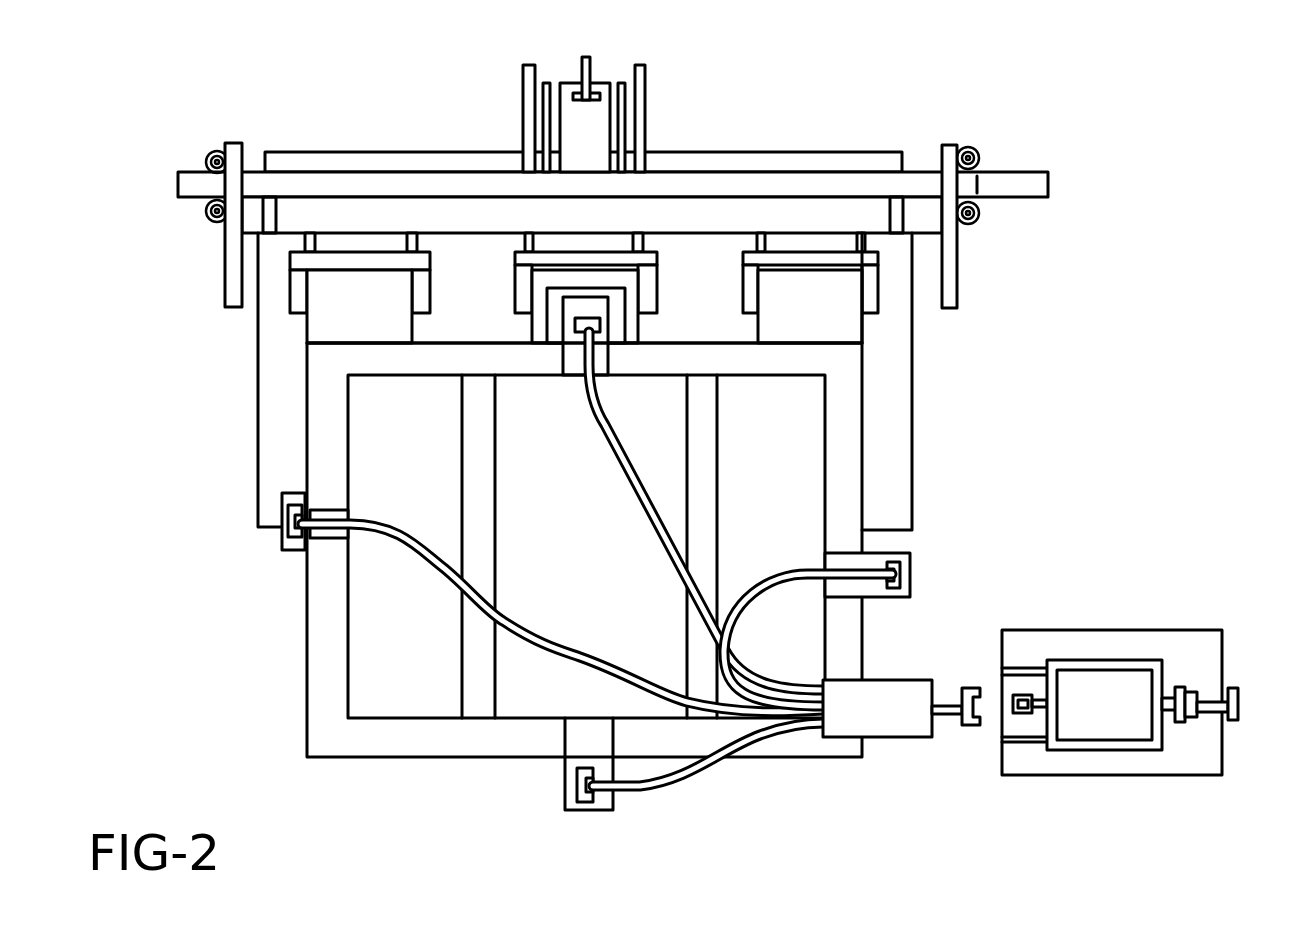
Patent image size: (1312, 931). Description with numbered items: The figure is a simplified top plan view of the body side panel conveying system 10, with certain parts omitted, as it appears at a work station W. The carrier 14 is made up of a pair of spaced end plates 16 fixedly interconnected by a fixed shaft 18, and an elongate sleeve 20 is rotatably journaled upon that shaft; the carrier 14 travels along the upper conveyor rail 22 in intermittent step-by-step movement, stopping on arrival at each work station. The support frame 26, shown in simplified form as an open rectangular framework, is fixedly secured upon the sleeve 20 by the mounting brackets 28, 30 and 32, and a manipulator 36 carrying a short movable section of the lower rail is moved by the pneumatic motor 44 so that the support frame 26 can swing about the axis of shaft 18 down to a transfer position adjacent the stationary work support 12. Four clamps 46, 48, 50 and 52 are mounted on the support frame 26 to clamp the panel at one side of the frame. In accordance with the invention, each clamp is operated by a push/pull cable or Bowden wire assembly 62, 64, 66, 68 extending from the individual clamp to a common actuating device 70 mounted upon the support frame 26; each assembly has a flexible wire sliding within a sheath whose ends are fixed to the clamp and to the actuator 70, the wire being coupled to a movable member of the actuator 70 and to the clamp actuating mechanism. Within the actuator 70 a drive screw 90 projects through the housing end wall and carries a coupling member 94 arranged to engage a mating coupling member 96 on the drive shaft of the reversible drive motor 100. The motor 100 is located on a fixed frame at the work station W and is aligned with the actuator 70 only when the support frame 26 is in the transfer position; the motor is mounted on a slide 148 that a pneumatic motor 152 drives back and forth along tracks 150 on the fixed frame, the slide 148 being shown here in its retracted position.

The body side panel conveying system 10 is at (812, 184).
The stationary work support 12 is at (890, 351).
The carrier 14 is at (960, 296).
The end plates 16 is at (226, 273).
The fixed shaft 18 is at (930, 226).
The sleeve 20 is at (675, 232).
The upper conveyor rail 22 is at (1062, 107).
The support frame 26 is at (303, 689).
The mounting bracket 28 is at (430, 300).
The mounting bracket 30 is at (517, 287).
The mounting bracket 32 is at (743, 290).
The manipulator 36 is at (644, 113).
The pneumatic motor 44 is at (1192, 641).
The clamp 46 is at (605, 338).
The clamp 48 is at (274, 546).
The clamp 50 is at (563, 776).
The clamp 52 is at (907, 552).
The push/pull cable assembly 62 is at (592, 402).
The push/pull cable assembly 64 is at (590, 655).
The push/pull cable assembly 66 is at (680, 770).
The push/pull cable assembly 68 is at (807, 569).
The common actuating device 70 is at (882, 722).
The drive screw 90 is at (950, 716).
The coupling member 94 is at (975, 687).
The mating coupling member 96 is at (1027, 694).
The reversible drive motor 100 is at (1097, 696).
The slide 148 is at (1122, 751).
The tracks 150 is at (1020, 667).
The pneumatic motor 152 is at (1206, 699).
The work station W is at (925, 450).